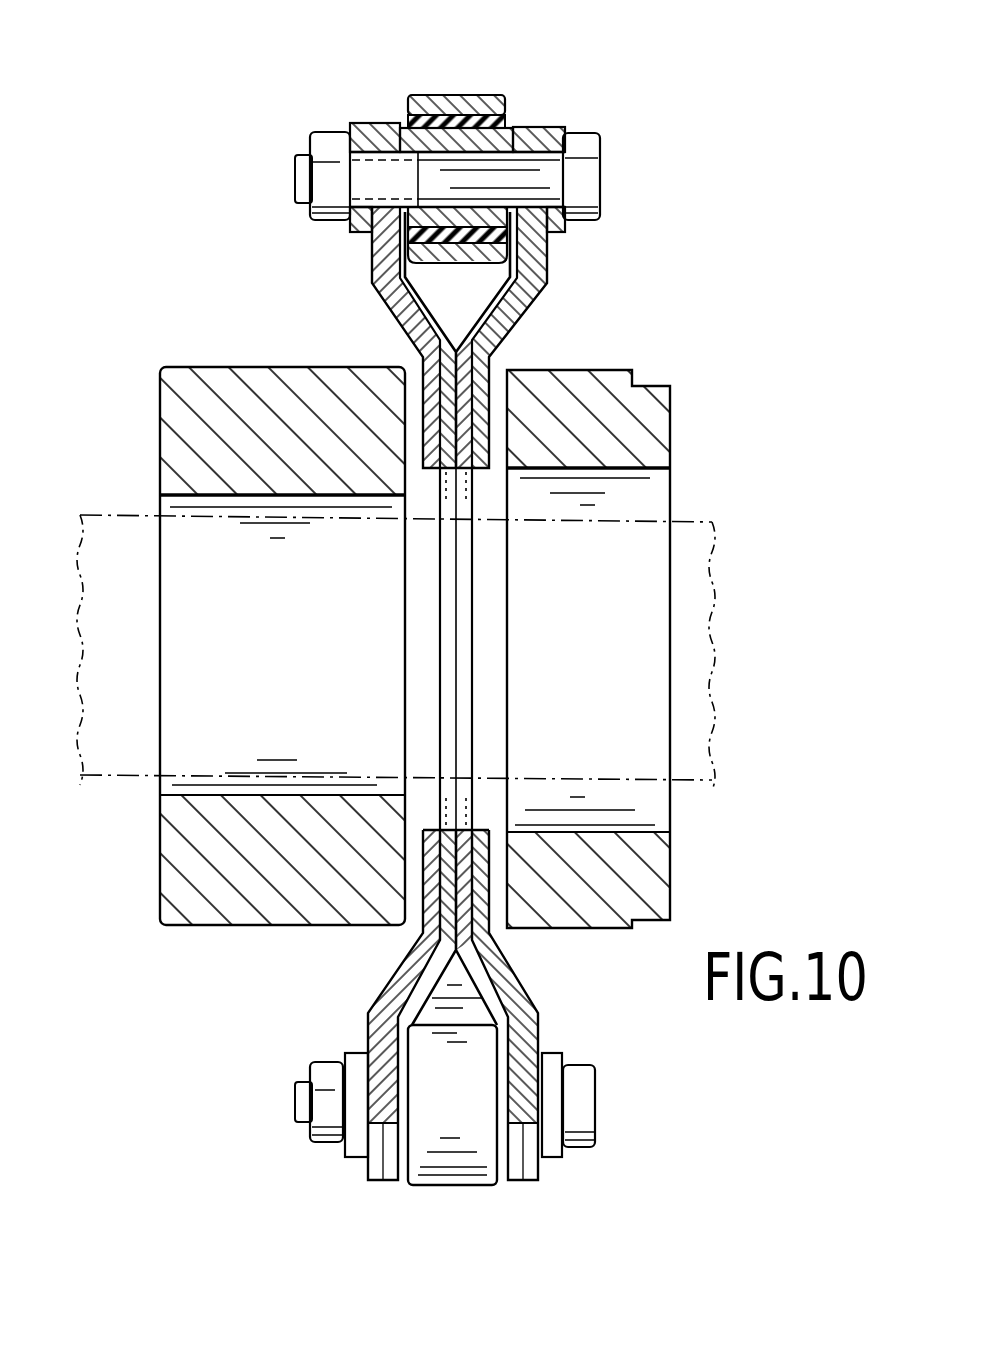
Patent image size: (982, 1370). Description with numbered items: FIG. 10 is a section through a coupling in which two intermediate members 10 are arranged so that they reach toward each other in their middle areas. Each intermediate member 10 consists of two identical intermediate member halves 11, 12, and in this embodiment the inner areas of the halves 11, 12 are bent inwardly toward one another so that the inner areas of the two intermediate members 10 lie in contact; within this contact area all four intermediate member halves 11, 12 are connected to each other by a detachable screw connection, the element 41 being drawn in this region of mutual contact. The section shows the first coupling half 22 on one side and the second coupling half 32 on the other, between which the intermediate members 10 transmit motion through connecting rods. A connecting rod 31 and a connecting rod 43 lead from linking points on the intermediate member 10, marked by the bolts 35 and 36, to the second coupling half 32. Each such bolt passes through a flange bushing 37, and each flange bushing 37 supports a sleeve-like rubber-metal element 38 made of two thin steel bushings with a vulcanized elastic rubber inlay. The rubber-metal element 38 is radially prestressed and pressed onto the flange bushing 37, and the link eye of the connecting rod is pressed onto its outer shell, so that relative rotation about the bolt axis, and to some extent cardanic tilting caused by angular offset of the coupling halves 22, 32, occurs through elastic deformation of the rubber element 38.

The intermediate member 10 is at (375, 315).
The intermediate member half 11 is at (397, 983).
The intermediate member half 12 is at (387, 1037).
The first coupling half 22 is at (652, 432).
The connecting rod 31 is at (491, 131).
The second coupling half 32 is at (186, 425).
The bolt 35 is at (580, 1100).
The bolt 36 is at (578, 172).
The flange bushing 37 is at (510, 140).
The rubber-metal element 38 is at (472, 115).
The flexible strip 41 is at (503, 479).
The connecting rod 43 is at (478, 1165).